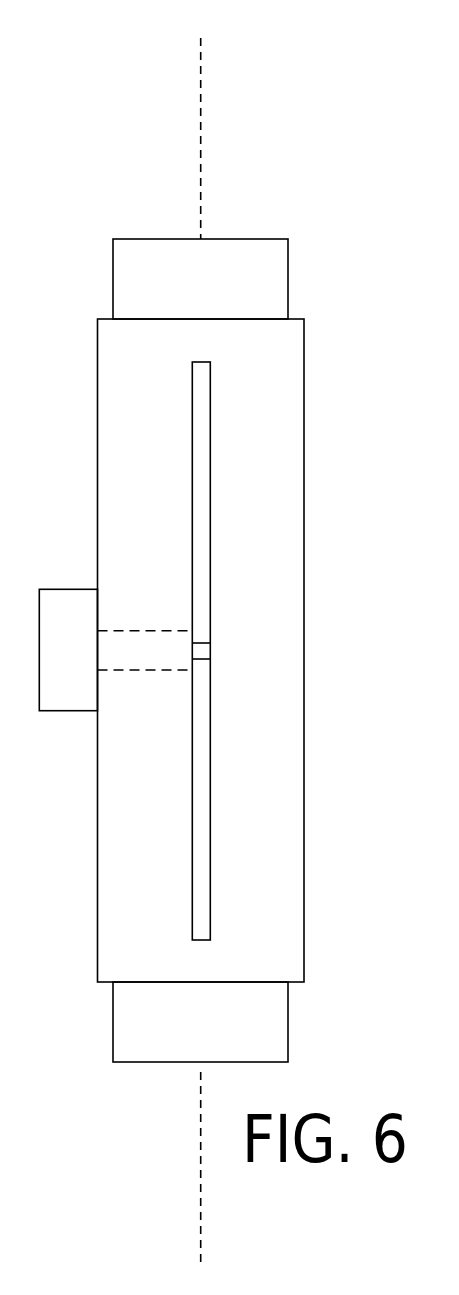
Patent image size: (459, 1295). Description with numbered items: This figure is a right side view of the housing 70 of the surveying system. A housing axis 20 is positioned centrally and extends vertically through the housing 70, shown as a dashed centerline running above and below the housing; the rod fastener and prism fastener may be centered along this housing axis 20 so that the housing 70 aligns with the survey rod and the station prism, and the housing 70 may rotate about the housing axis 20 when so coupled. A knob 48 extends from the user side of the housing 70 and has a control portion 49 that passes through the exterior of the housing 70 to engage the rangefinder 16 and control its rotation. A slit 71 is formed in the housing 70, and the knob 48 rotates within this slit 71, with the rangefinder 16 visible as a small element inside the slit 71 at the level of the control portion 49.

The housing axis 20 is at (200, 631).
The housing 70 is at (201, 650).
The slit 71 is at (197, 443).
The rangefinder 16 is at (199, 652).
The knob 48 is at (68, 649).
The control portion 49 is at (145, 650).